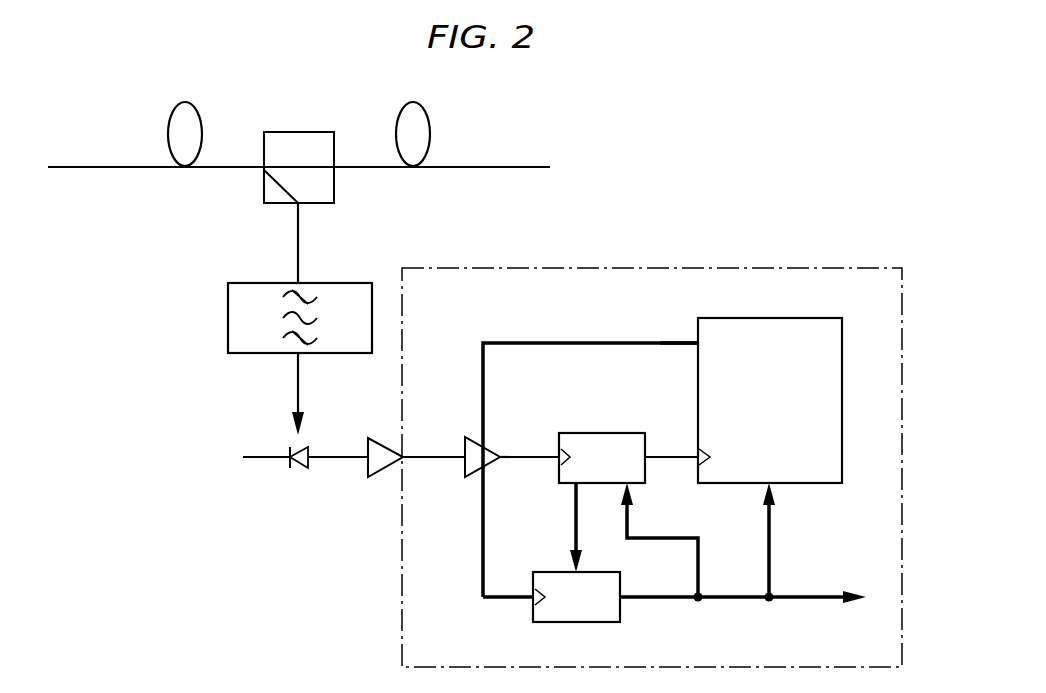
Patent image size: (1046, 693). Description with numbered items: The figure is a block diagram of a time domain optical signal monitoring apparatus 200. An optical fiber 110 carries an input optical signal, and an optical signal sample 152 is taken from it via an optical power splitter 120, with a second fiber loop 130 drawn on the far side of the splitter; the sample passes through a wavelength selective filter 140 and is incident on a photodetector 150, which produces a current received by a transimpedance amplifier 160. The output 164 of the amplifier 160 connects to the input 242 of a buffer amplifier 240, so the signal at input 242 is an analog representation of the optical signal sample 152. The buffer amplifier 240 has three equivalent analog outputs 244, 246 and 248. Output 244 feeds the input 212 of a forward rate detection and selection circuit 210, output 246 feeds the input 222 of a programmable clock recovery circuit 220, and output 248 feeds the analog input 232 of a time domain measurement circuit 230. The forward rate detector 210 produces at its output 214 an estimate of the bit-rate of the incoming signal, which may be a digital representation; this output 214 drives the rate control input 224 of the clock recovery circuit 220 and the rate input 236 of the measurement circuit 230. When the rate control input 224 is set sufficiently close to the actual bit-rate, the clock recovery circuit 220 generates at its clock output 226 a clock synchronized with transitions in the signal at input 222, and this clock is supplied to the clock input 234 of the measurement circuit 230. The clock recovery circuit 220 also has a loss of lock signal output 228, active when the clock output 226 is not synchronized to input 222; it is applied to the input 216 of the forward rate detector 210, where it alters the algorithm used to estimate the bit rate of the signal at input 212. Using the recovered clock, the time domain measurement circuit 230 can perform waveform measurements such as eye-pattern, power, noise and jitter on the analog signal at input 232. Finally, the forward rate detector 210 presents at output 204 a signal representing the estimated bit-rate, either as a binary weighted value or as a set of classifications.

The optical fiber 110 is at (183, 103).
The optical power splitter 120 is at (297, 132).
The fiber loop 130 is at (413, 103).
The wavelength selective filter 140 is at (228, 317).
The photodetector 150 is at (297, 467).
The optical signal sample 152 is at (305, 424).
The transimpedance amplifier 160 is at (381, 473).
The output of amplifier 164 is at (402, 457).
The time domain optical signal monitoring apparatus 200 is at (850, 268).
The output of forward rate detector 204 is at (860, 592).
The forward rate detection and selection circuit 210 is at (573, 622).
The input of forward rate detector 212 is at (528, 599).
The output of forward rate detector 214 is at (628, 599).
The input of forward rate detector 216 is at (573, 570).
The programmable clock recovery circuit 220 is at (611, 433).
The input of clock recovery circuit 222 is at (541, 455).
The rate control input 224 is at (624, 493).
The clock output 226 is at (648, 453).
The loss of lock signal output 228 is at (572, 495).
The time domain measurement circuit 230 is at (756, 318).
The analog input 232 is at (695, 343).
The clock input 234 is at (693, 463).
The rate input 236 is at (777, 493).
The buffer amplifier 240 is at (466, 442).
The input of buffer amplifier 242 is at (461, 460).
The analog output 244 is at (481, 480).
The analog output 246 is at (498, 460).
The analog output 248 is at (484, 440).